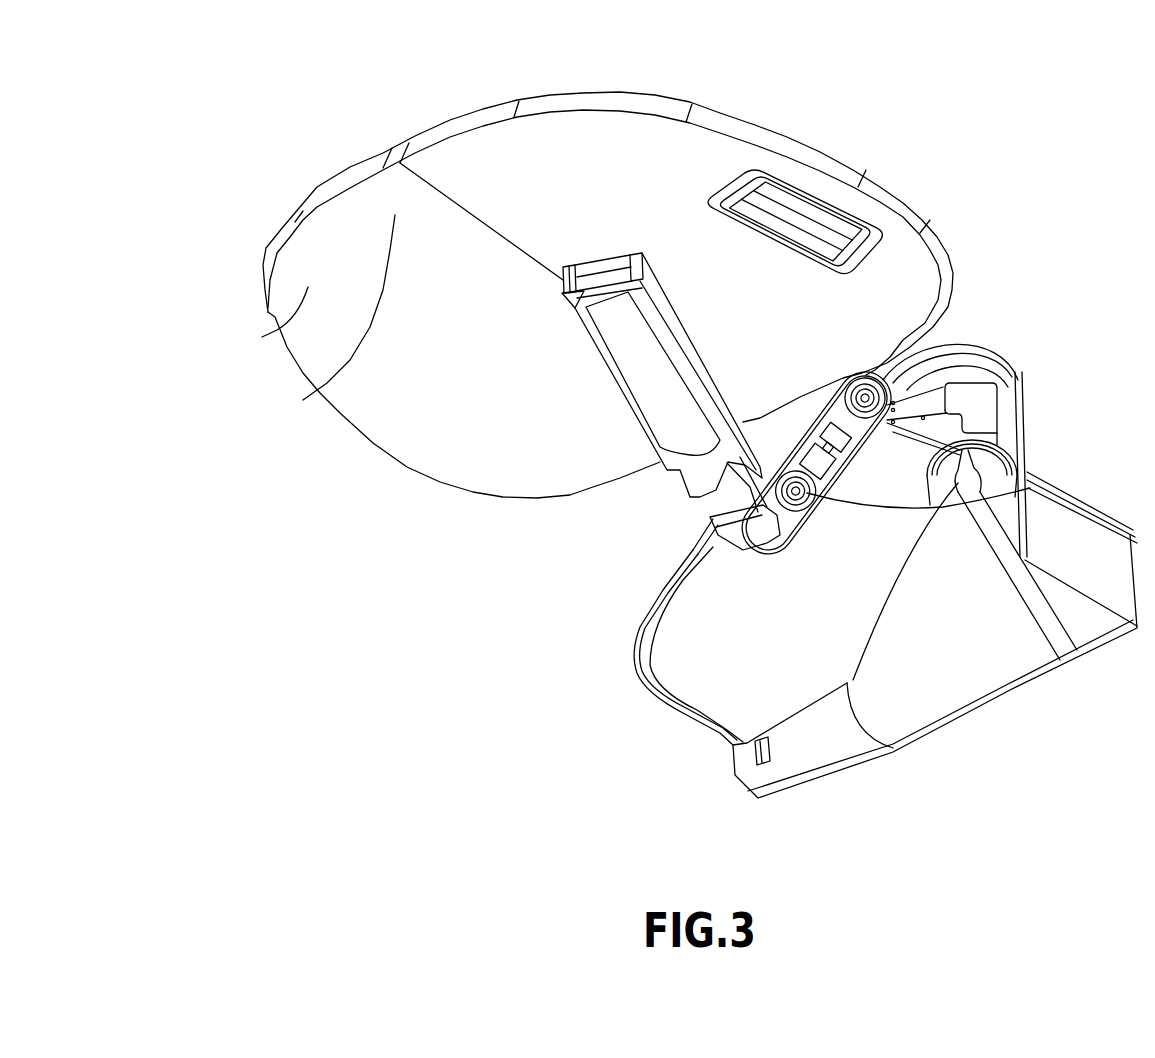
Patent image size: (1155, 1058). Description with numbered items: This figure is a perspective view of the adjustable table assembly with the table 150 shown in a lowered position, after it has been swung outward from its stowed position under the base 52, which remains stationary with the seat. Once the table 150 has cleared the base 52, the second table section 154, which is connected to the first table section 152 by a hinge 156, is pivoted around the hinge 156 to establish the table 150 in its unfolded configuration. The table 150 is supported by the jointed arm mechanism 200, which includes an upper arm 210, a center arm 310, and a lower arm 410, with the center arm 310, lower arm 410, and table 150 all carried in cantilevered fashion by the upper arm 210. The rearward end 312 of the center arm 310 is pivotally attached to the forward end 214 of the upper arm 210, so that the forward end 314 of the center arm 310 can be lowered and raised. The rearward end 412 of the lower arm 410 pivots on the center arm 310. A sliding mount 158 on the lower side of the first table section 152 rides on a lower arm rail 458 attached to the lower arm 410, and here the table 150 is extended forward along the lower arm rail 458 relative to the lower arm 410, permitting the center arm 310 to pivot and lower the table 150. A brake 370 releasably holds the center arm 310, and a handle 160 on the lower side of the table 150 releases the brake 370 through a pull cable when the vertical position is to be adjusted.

The table 150 is at (318, 152).
The first table section 152 is at (682, 104).
The second table section 154 is at (262, 337).
The hinge 156 is at (303, 400).
The sliding mount 158 is at (578, 317).
The handle 160 is at (800, 207).
The jointed arm mechanism 200 is at (503, 603).
The upper arm 210 is at (942, 416).
The forward end of the upper arm 214 is at (955, 347).
The center arm 310 is at (892, 402).
The rearward end of the center arm 312 is at (887, 363).
The forward end of the center arm 314 is at (1030, 488).
The brake 370 is at (983, 452).
The lower arm 410 is at (710, 519).
The rearward end of the lower arm 412 is at (750, 533).
The lower arm rail 458 is at (563, 287).
The base 52 is at (660, 697).